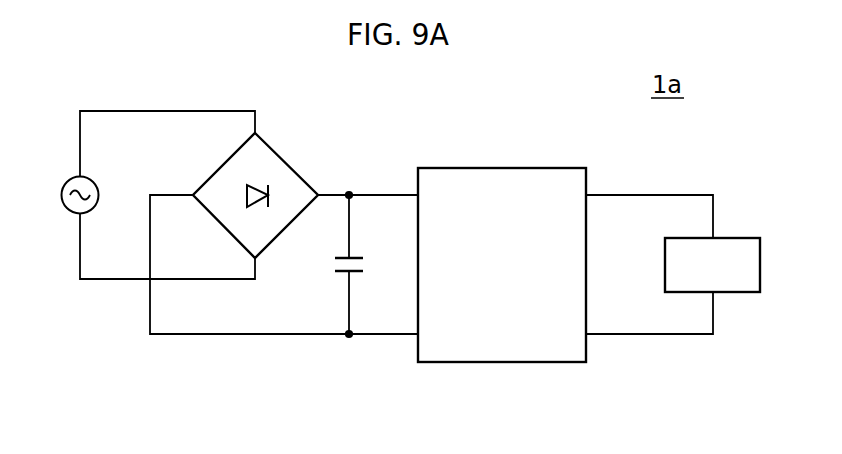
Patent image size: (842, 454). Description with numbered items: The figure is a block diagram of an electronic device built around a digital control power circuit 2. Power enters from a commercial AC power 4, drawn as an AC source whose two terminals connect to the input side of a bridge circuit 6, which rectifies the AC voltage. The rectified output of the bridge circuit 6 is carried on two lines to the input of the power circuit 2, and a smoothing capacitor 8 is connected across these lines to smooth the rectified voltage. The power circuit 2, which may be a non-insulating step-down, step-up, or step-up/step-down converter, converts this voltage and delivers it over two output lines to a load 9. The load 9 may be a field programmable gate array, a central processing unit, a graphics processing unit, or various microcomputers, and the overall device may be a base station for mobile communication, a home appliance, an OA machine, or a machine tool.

The power circuit 2 is at (513, 362).
The commercial AC power 4 is at (63, 207).
The bridge circuit 6 is at (284, 153).
The smoothing capacitor 8 is at (333, 263).
The load 9 is at (735, 238).